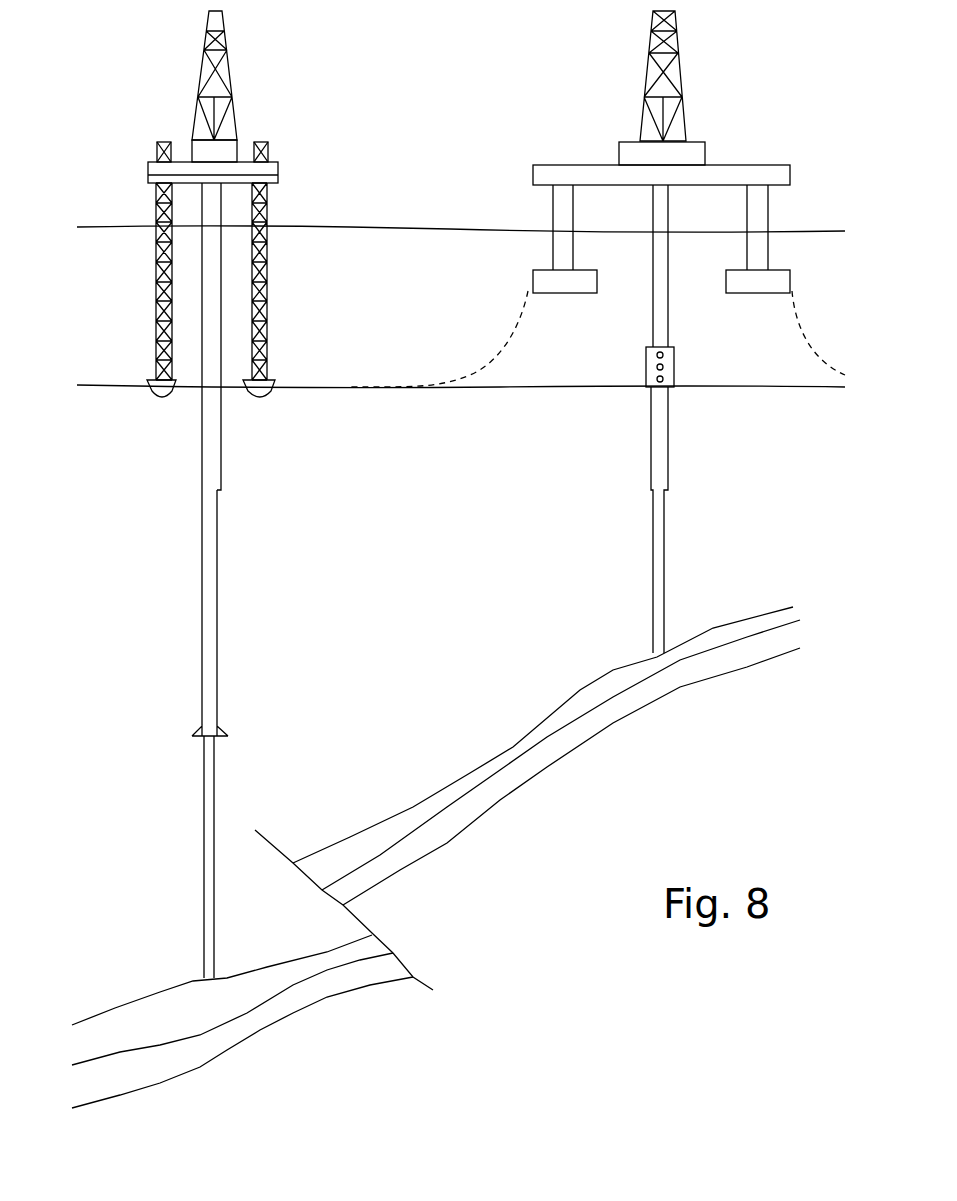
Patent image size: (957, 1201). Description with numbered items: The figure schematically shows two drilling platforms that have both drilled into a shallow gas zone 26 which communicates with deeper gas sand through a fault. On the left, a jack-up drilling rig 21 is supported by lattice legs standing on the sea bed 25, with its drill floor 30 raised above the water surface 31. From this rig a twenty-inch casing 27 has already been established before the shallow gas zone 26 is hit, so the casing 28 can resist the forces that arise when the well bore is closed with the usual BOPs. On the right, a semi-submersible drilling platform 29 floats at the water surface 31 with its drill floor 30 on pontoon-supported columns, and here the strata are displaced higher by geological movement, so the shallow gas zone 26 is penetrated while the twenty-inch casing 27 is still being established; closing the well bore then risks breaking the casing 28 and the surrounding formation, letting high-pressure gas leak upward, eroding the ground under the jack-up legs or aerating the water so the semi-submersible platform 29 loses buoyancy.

In FIG. 8A, the jack-up drilling platform 21 is at (278, 57).
In FIG. 8A, the sea bed 25 is at (115, 391).
In FIG. 8A, the shallow gas zone 26 is at (318, 995).
In FIG. 8B, the shallow gas zone 26 is at (633, 703).
In FIG. 8A, the 20 inch casing 27 is at (205, 637).
In FIG. 8B, the 20 inch casing 27 is at (658, 565).
In FIG. 8A, the casing 28 is at (266, 561).
In FIG. 8B, the semi-submersible drilling platform 29 is at (741, 60).
In FIG. 8A, the drill floor 30 is at (273, 162).
In FIG. 8B, the drill floor 30 is at (552, 163).
In FIG. 8A, the water surface 31 is at (391, 224).